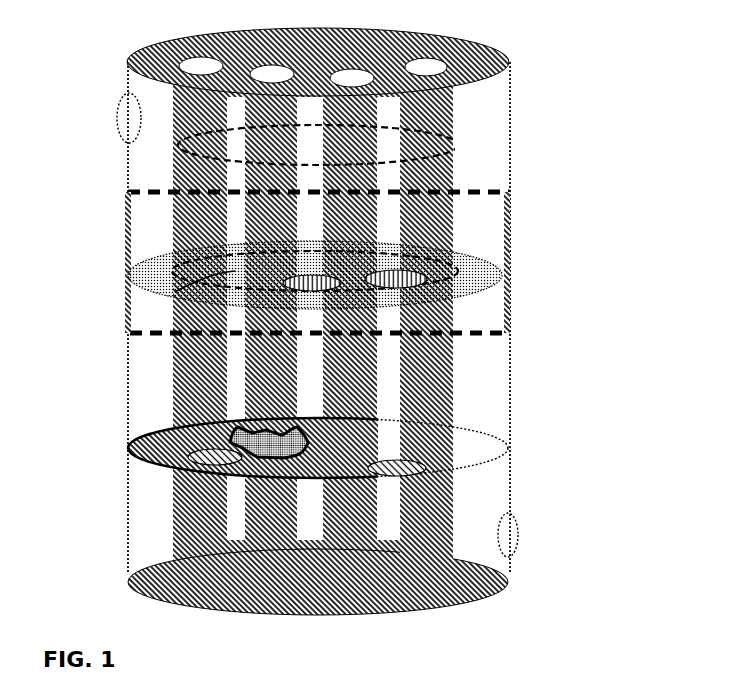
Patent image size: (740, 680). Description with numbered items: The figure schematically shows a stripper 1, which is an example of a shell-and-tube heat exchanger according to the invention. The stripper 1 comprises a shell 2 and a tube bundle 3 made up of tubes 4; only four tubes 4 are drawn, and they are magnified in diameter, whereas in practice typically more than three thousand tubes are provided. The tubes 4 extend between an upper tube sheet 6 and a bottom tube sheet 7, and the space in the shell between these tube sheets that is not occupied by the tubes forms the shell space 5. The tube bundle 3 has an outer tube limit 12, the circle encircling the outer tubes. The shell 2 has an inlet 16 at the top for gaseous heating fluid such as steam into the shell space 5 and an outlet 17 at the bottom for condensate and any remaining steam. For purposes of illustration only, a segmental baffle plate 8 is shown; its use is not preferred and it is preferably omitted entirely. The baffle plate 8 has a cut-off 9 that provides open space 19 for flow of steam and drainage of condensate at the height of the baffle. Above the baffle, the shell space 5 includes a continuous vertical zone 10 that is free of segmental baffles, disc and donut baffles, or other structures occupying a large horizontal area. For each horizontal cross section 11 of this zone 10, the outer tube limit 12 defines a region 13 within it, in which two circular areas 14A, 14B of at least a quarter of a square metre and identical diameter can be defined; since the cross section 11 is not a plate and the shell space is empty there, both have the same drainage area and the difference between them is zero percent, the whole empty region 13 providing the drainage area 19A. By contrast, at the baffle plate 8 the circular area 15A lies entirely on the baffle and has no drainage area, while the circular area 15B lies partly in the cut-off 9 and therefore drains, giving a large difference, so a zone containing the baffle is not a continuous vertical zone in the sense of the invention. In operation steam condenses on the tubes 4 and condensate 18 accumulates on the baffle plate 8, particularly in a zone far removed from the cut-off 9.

The stripper 1 is at (575, 52).
The shell 2 is at (510, 128).
The tube bundle 3 is at (440, 535).
The tubes 4 is at (437, 112).
The shell space 5 is at (485, 165).
The upper tube sheet 6 is at (470, 54).
The bottom tube sheet 7 is at (485, 595).
The segmental baffle plate 8 is at (140, 448).
The cut-off 9 is at (386, 424).
The continuous vertical zone 10 is at (500, 326).
The horizontal cross section 11 is at (493, 273).
The outer tube limit 12 is at (446, 147).
The region 13 is at (178, 270).
The circular area 14A is at (310, 278).
The circular area 14B is at (393, 272).
The circular area 15A is at (192, 458).
The circular area 15B is at (425, 471).
The inlet 16 is at (122, 118).
The outlet 17 is at (518, 540).
The condensate 18 is at (245, 458).
The open space 19 is at (476, 440).
The drainage area 19A is at (175, 292).